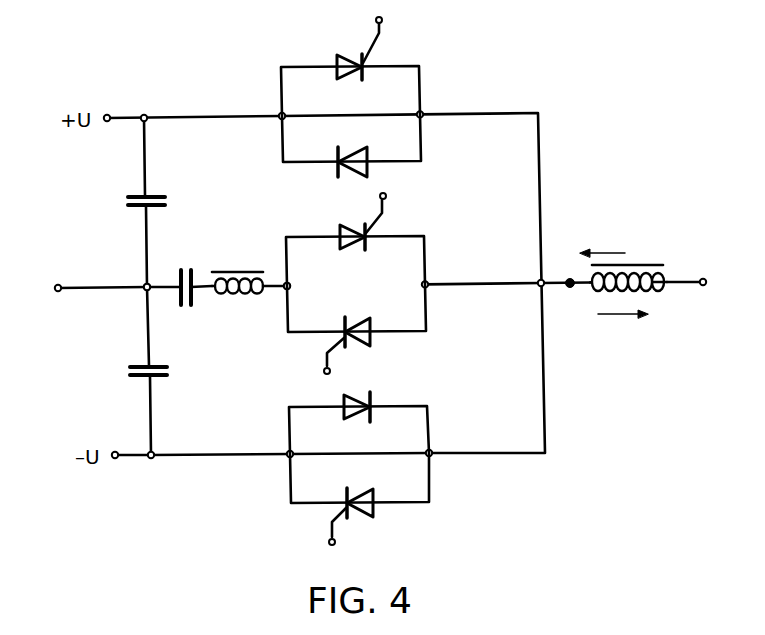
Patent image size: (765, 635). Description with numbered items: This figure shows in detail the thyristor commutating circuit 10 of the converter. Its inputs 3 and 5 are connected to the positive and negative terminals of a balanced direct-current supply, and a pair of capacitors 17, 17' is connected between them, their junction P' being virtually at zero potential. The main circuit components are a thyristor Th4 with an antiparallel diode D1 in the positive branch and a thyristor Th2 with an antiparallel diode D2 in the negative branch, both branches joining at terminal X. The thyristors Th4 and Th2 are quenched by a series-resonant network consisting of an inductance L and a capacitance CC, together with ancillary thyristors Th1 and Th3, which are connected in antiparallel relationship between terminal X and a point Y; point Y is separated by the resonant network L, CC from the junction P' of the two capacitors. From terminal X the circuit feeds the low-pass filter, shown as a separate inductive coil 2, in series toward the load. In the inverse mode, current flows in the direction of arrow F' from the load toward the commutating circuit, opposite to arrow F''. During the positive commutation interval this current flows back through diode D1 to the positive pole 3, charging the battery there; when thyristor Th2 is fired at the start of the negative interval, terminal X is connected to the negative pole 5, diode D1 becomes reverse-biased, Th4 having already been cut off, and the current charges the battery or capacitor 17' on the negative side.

The input 3 is at (119, 117).
The input 5 is at (124, 458).
The thyristor commutating circuit 10 is at (481, 113).
The capacitor 17 is at (121, 205).
The capacitor 17' is at (132, 358).
The junction P' is at (123, 269).
The capacitance CC is at (180, 283).
The inductance L is at (256, 297).
The point Y is at (291, 288).
The thyristor Th4 is at (356, 50).
The antiparallel diode D1 is at (346, 178).
The ancillary thyristor Th1 is at (372, 232).
The ancillary thyristor Th3 is at (350, 347).
The antiparallel diode D2 is at (341, 400).
The thyristor Th2 is at (352, 512).
The terminal X is at (570, 291).
The inductive coil 2 is at (645, 262).
The arrow F' is at (602, 244).
The arrow F'' is at (623, 328).